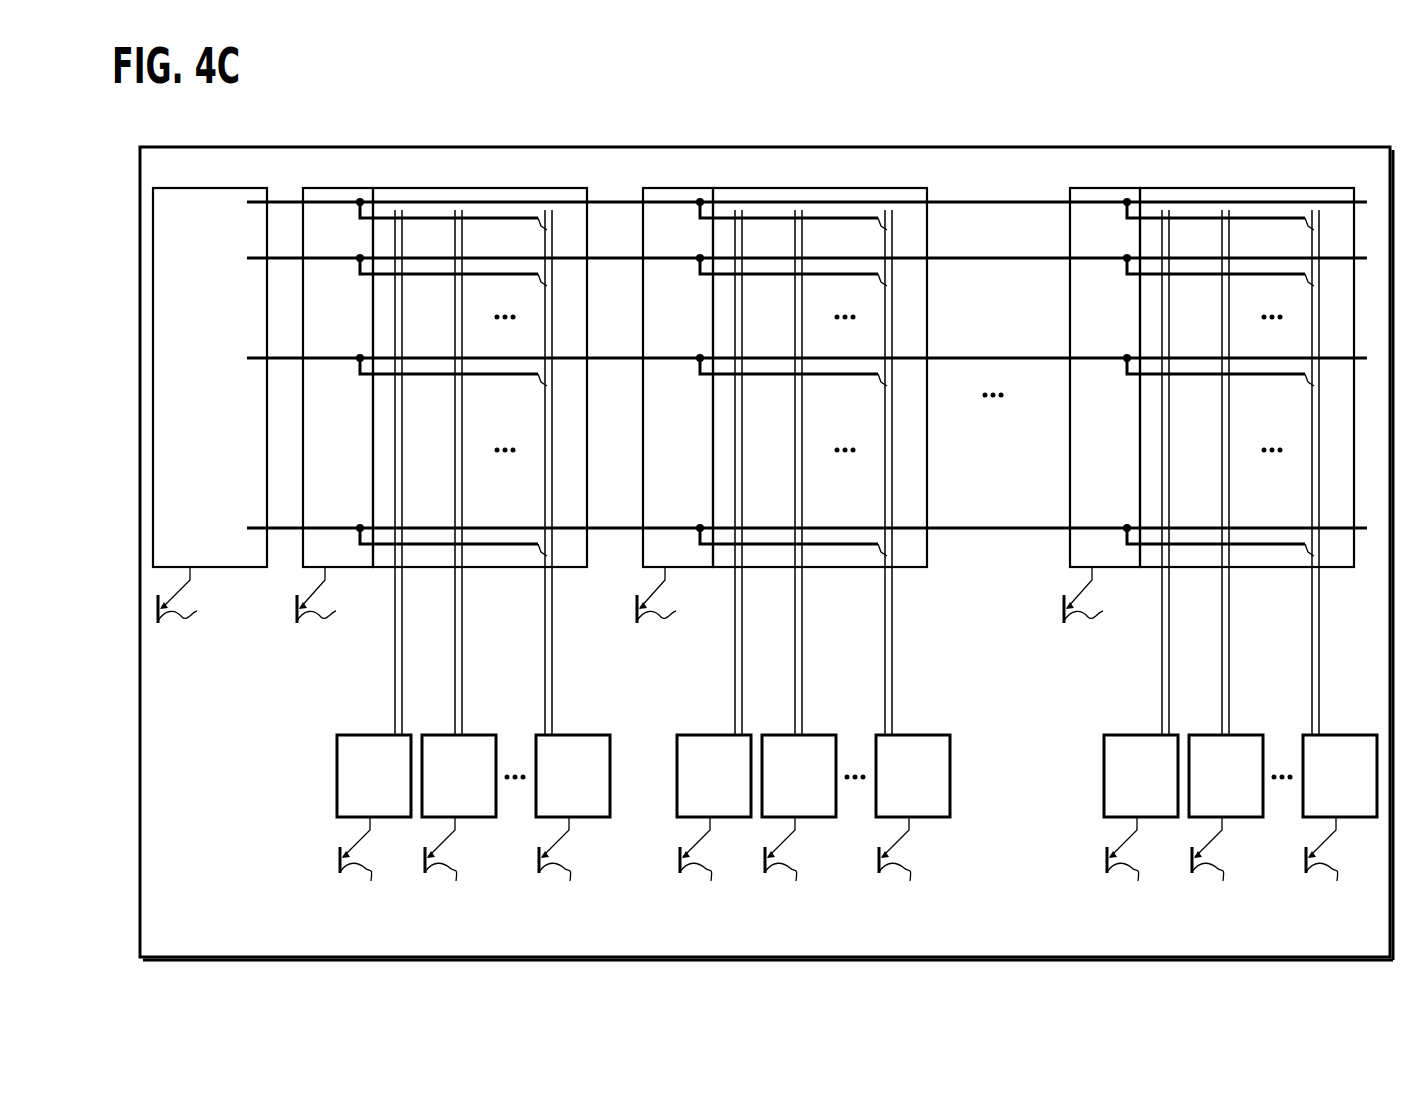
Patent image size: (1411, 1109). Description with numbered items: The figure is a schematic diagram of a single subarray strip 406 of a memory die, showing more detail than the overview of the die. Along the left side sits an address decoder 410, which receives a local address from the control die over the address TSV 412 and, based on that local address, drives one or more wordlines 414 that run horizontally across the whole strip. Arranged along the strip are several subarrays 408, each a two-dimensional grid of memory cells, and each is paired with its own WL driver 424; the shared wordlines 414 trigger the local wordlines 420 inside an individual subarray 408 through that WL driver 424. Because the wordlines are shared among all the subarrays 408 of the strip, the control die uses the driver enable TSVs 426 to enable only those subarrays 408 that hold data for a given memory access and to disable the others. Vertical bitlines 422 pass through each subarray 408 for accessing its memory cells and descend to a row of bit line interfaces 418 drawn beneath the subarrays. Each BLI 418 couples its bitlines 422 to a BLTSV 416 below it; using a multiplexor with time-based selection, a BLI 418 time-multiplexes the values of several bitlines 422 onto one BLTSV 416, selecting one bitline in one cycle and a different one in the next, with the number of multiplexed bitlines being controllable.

The subarray strip 406 is at (766, 553).
The subarray 408 is at (388, 187).
The address decoder 410 is at (210, 377).
The address TSV 412 is at (205, 622).
The wordline 414 is at (1020, 528).
The bitline through silicon via (BLTSV) 416 is at (856, 877).
The bit line interface (BLI) 418 is at (857, 776).
The local wordline 420 is at (548, 556).
The bitline 422 is at (545, 212).
The wordline driver (WL driver) 424 is at (721, 377).
The driver enable TSV 426 is at (720, 637).